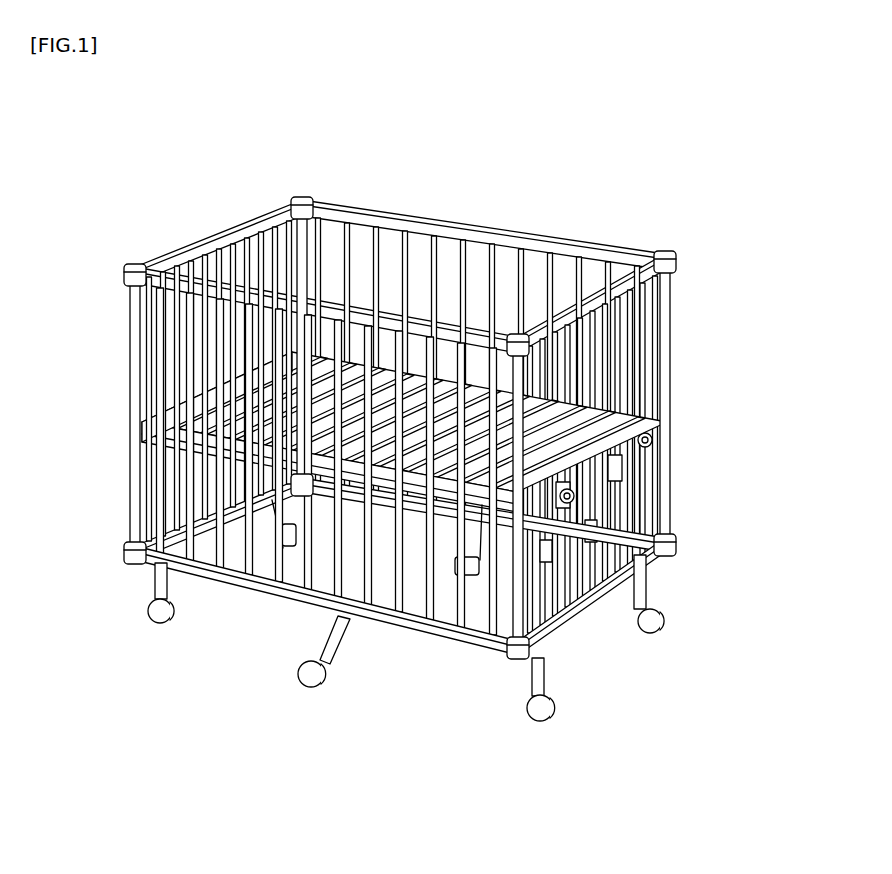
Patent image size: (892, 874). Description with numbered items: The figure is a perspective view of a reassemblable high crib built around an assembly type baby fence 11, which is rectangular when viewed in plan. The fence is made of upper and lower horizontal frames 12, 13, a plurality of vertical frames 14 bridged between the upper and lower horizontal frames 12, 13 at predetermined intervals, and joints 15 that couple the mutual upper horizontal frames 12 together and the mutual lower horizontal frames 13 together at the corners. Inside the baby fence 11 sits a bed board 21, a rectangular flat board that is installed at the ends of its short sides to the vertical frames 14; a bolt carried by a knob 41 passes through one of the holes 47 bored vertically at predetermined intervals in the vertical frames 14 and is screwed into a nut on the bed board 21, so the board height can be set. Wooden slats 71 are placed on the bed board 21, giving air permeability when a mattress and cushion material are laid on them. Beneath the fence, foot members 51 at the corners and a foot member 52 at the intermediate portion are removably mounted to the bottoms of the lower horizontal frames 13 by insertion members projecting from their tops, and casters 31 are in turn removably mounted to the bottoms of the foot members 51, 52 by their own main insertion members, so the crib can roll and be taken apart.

The assembly type baby fence 11 is at (478, 196).
The upper horizontal frame 12 is at (213, 292).
The lower horizontal frame 13 is at (562, 618).
The vertical frame 14 is at (672, 332).
The joint 15 is at (303, 198).
The bed board 21 is at (215, 441).
The caster 31 is at (160, 626).
The knob 41 is at (567, 494).
The hole 47 is at (636, 506).
The foot member 51 is at (150, 596).
The foot member 52 is at (320, 632).
The wooden slat 71 is at (390, 335).